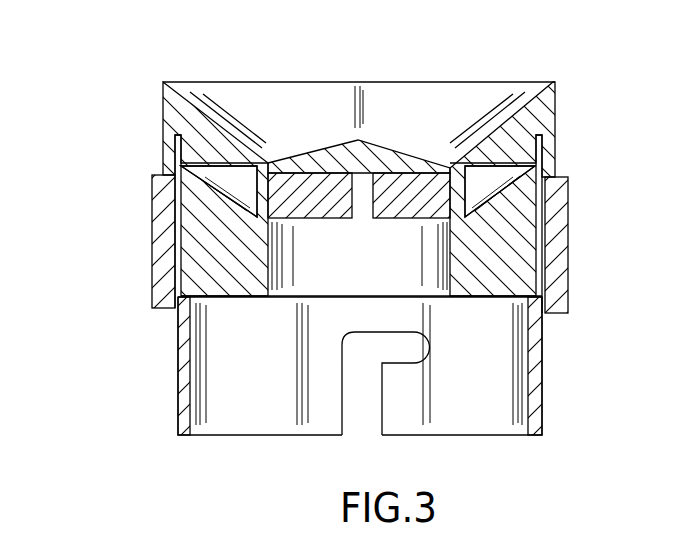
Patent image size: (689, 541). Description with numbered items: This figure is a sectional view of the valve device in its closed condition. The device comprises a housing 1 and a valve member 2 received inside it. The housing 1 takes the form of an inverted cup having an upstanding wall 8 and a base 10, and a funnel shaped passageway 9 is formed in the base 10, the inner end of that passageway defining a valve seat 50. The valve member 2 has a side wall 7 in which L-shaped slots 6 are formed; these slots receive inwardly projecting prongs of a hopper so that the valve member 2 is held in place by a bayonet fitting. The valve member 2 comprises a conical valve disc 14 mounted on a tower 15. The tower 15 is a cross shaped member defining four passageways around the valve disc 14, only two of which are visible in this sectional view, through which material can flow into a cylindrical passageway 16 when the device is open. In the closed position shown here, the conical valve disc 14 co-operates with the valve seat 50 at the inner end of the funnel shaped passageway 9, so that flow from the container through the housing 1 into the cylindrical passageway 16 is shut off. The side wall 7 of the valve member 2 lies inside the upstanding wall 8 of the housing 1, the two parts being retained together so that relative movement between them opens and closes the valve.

The housing 1 is at (162, 126).
The valve member 2 is at (175, 382).
The L-shaped slots 6 is at (358, 428).
The side wall 7 is at (178, 345).
The upstanding wall 8 is at (160, 210).
The funnel shaped passageway 9 is at (372, 110).
The base 10 is at (205, 130).
The conical valve disc 14 is at (405, 160).
The tower 15 is at (465, 195).
The cylindrical passageway 16 is at (425, 286).
The valve seat 50 is at (270, 160).